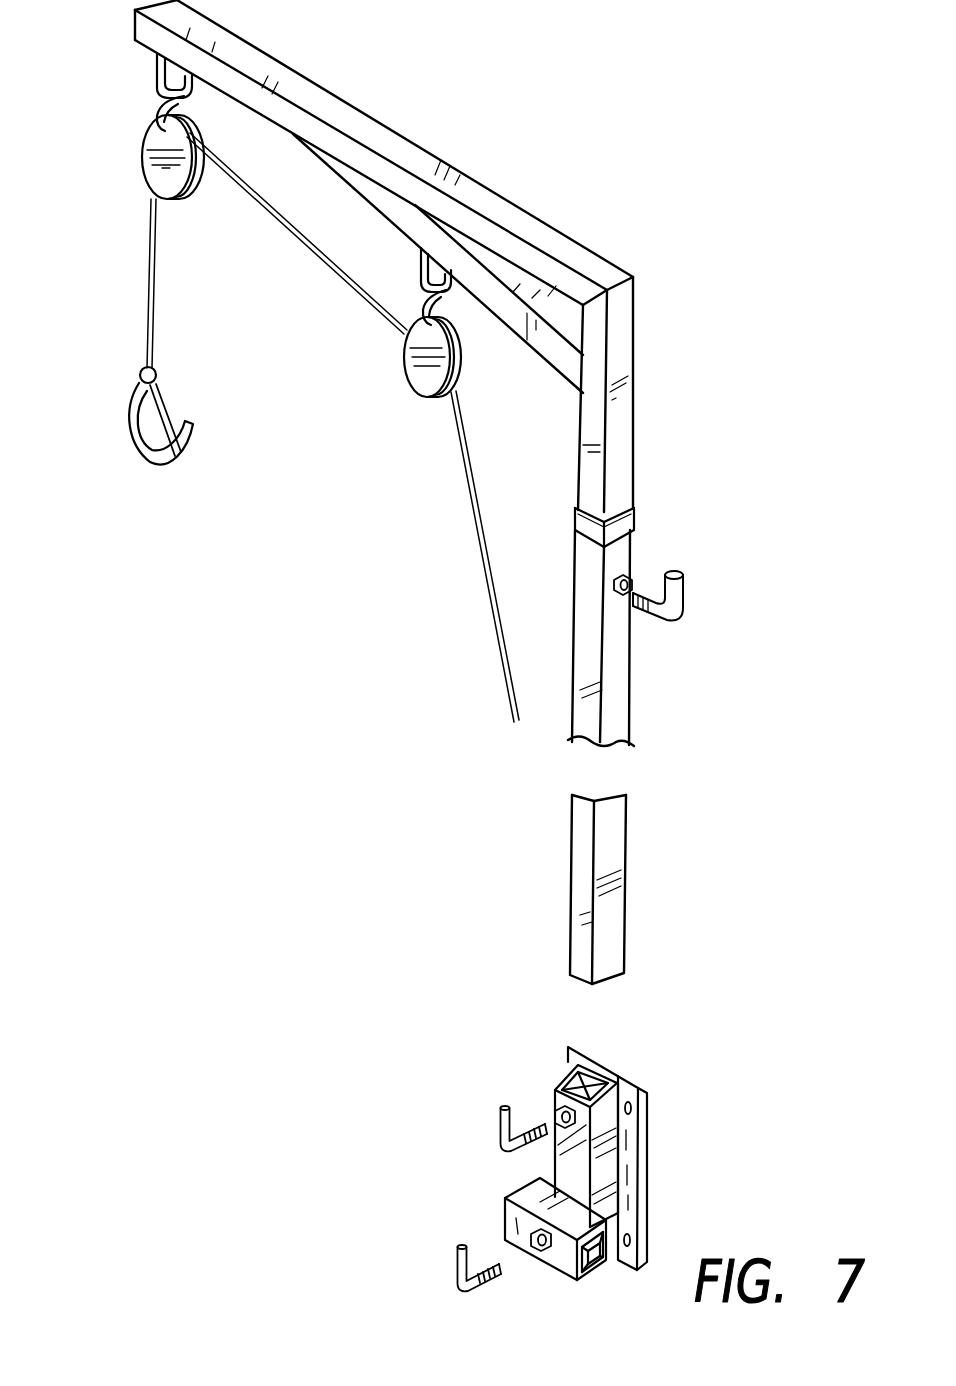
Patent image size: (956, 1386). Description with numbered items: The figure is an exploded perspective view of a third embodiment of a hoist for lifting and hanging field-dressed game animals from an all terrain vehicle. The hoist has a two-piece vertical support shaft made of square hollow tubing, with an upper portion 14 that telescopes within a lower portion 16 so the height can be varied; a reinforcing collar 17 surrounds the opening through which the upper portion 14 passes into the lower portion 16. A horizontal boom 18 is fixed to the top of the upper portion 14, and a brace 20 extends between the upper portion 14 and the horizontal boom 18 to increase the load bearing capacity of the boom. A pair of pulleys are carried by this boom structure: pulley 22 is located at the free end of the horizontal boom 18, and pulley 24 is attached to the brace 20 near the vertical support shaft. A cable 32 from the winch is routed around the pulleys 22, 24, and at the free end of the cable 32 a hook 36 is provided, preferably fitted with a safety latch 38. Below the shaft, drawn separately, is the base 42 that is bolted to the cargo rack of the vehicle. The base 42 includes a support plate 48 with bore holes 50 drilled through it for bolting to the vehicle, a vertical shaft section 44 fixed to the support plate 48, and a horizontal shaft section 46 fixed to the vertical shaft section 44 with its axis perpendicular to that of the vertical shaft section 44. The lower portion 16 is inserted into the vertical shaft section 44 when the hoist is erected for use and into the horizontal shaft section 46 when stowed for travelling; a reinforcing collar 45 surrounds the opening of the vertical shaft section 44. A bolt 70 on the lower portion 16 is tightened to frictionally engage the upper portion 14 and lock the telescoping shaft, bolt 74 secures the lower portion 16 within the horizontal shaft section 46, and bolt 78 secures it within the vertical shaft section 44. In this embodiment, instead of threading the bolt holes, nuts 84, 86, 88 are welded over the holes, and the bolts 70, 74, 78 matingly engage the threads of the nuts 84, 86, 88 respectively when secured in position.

The upper portion 14 is at (625, 490).
The lower portion 16 is at (625, 712).
The reinforcing collar 17 is at (630, 528).
The horizontal boom 18 is at (353, 117).
The brace 20 is at (477, 273).
The pulley 22 is at (145, 167).
The pulley 24 is at (405, 372).
The cable 32 is at (320, 258).
The hook 36 is at (130, 429).
The safety latch 38 is at (165, 404).
The base 42 is at (665, 1150).
The vertical shaft section 44 is at (635, 1133).
The reinforcing collar 45 is at (557, 1085).
The horizontal shaft section 46 is at (520, 1194).
The support plate 48 is at (650, 1190).
The bore holes 50 is at (631, 1100).
The bolt 70 is at (690, 612).
The bolt 74 is at (455, 1287).
The bolt 78 is at (500, 1148).
The nut 84 is at (638, 585).
The nut 86 is at (542, 1255).
The nut 88 is at (555, 1114).